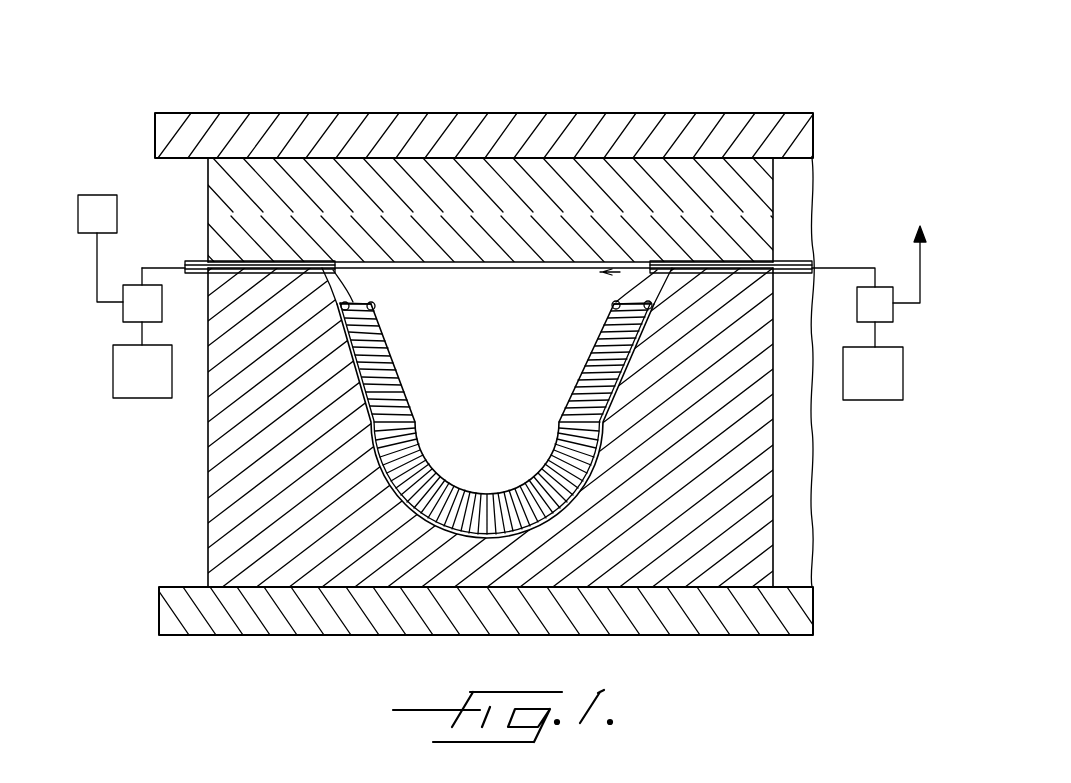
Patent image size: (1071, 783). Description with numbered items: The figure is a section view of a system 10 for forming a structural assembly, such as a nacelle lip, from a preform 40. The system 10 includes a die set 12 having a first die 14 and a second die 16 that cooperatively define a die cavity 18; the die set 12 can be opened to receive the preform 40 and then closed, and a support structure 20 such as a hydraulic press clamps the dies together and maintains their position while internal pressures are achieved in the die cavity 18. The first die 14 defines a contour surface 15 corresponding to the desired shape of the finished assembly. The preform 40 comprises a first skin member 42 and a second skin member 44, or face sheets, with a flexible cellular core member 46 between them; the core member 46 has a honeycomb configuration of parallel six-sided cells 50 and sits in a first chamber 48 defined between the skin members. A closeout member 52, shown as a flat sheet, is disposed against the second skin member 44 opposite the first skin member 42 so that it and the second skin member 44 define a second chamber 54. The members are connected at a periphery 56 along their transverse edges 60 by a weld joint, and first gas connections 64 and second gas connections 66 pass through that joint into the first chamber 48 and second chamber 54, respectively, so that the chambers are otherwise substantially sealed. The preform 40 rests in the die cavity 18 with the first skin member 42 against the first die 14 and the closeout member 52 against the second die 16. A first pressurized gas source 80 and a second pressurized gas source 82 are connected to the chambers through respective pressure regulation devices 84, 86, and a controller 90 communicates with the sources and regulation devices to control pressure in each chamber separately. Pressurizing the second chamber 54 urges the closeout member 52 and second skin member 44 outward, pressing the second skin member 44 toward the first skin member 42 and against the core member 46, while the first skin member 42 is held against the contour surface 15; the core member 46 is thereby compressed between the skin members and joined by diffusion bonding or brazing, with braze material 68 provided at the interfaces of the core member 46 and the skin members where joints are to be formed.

The system 10 is at (308, 62).
The die set 12 is at (699, 147).
The first die 14 is at (213, 456).
The contour surface 15 is at (427, 513).
The second die 16 is at (473, 183).
The die cavity 18 is at (481, 293).
The support structure 20 is at (236, 112).
The preform 40 is at (406, 374).
The first skin member 42 is at (372, 437).
The second skin member 44 is at (403, 407).
The cellular core member 46 is at (410, 433).
The first chamber 48 is at (357, 293).
The cells 50 is at (587, 440).
The closeout member 52 is at (567, 258).
The second chamber 54 is at (553, 394).
The periphery 56 is at (284, 258).
The transverse edges 60 is at (237, 277).
The first gas connections 64 is at (190, 262).
The second gas connections 66 is at (800, 262).
The braze material 68 is at (338, 308).
The first pressurized gas source 80 is at (140, 390).
The second pressurized gas source 82 is at (875, 385).
The pressure regulation device 84 is at (132, 312).
The pressure regulation device 86 is at (882, 307).
The controller 90 is at (97, 195).